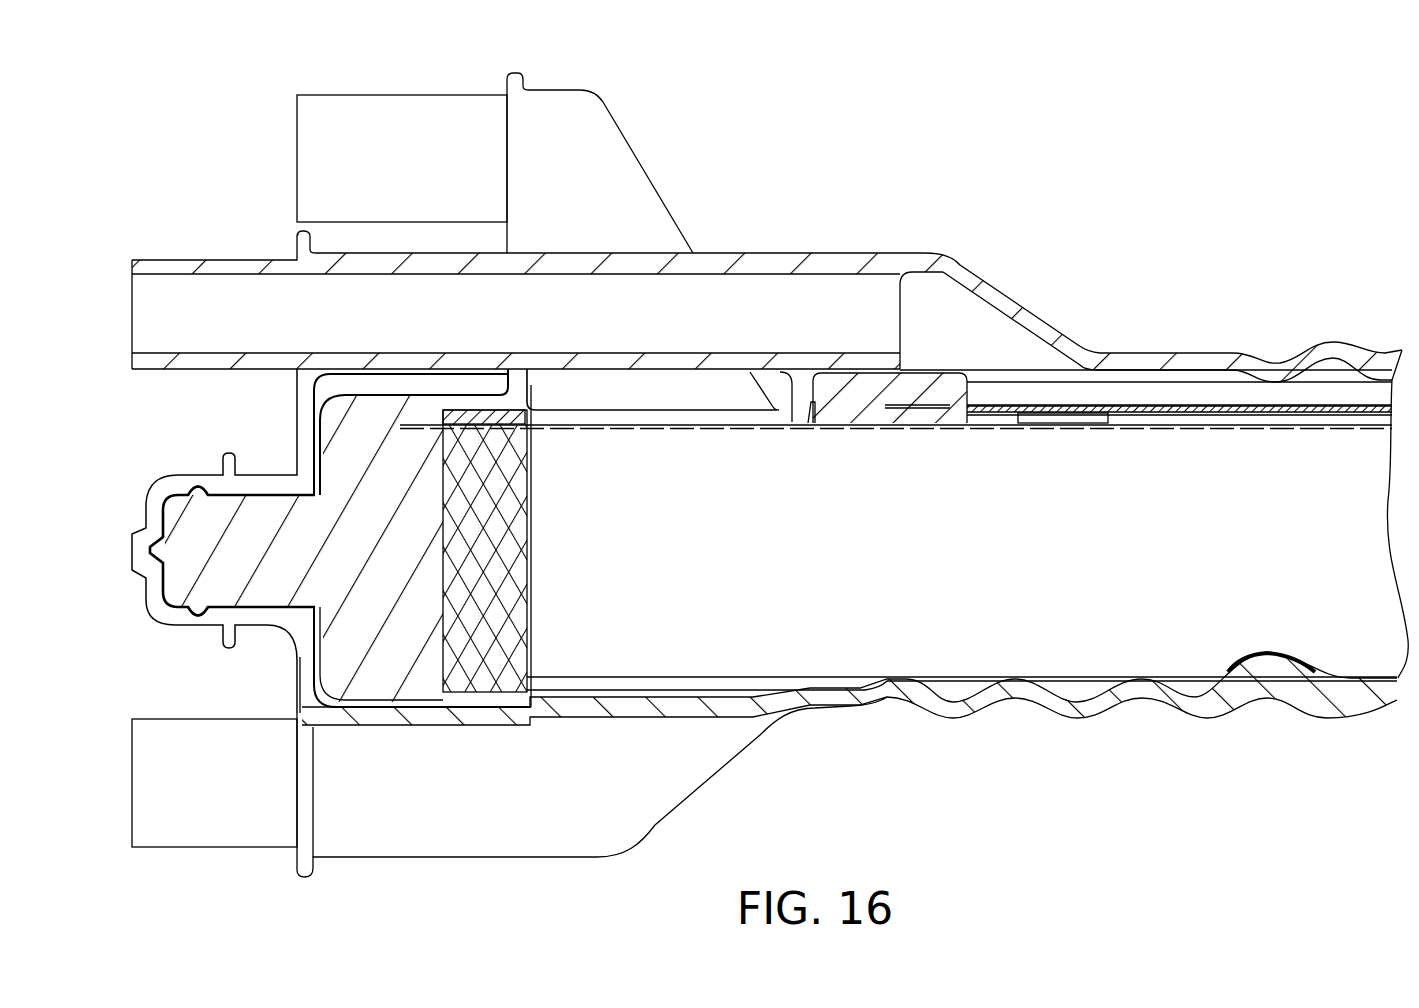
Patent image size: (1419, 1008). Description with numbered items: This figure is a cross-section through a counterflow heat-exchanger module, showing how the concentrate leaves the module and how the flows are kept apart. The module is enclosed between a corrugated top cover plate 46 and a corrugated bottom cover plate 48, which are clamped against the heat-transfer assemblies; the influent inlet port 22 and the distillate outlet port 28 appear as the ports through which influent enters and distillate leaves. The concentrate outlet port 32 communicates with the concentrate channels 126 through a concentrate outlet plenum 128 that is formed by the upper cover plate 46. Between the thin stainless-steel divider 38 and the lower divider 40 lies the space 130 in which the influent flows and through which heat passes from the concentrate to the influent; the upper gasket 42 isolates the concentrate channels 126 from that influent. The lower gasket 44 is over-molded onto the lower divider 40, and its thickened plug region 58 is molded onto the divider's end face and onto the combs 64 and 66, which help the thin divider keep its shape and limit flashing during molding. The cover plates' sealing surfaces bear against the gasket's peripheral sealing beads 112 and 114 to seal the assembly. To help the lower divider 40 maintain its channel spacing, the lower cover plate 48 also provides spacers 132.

The influent inlet port 22 is at (364, 94).
The distillate outlet port 28 is at (195, 848).
The concentrate outlet port 32 is at (147, 369).
The divider 38 is at (1070, 408).
The divider 40 is at (705, 428).
The gasket 42 is at (847, 415).
The gasket 44 is at (522, 400).
The top cover plate 46 is at (938, 132).
The bottom cover plate 48 is at (930, 773).
The plug region 58 is at (386, 405).
The comb 64 is at (481, 412).
The comb 66 is at (528, 515).
The peripheral sealing bead 112 is at (197, 486).
The peripheral sealing bead 114 is at (203, 613).
The concentrate channels 126 is at (1190, 393).
The concentrate outlet plenum 128 is at (968, 336).
The space 130 is at (1257, 413).
The spacers 132 is at (1268, 650).